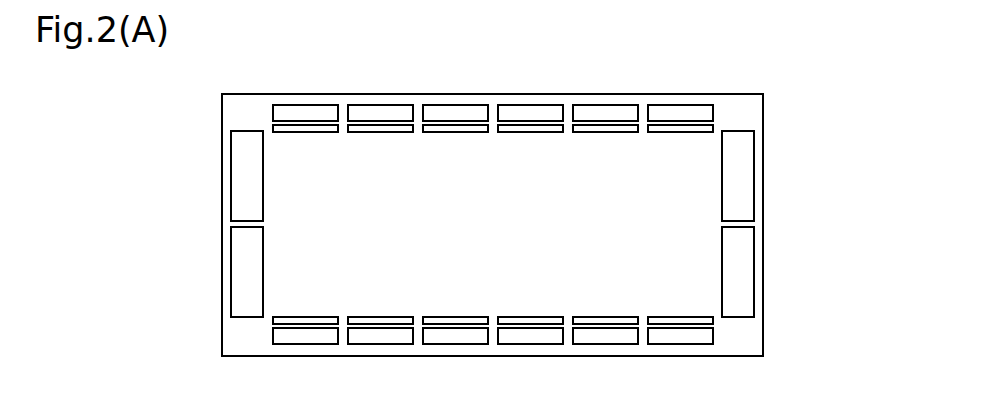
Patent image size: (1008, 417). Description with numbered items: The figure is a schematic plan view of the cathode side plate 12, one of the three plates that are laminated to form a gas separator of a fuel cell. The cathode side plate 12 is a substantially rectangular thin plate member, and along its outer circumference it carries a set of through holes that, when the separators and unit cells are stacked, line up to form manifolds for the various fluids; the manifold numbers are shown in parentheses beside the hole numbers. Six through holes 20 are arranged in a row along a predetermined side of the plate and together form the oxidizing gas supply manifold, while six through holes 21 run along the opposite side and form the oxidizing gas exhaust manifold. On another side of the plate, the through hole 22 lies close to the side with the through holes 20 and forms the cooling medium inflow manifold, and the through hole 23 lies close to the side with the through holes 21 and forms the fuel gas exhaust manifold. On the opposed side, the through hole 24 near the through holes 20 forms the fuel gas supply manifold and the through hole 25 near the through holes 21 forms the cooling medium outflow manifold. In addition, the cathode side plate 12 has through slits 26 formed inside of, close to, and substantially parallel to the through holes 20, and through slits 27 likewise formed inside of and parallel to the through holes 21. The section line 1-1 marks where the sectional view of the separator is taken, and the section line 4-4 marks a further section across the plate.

The section line 1- 1 is at (623, 82).
The section line 4- 4 is at (213, 170).
The cathode side plate 12 is at (478, 73).
The through holes 20 is at (453, 112).
The through holes 21 is at (528, 337).
The through hole 22 is at (247, 198).
The through hole 23 is at (247, 295).
The through hole 24 is at (738, 198).
The through hole 25 is at (738, 295).
The through slits 26 is at (525, 131).
The through slits 27 is at (528, 318).